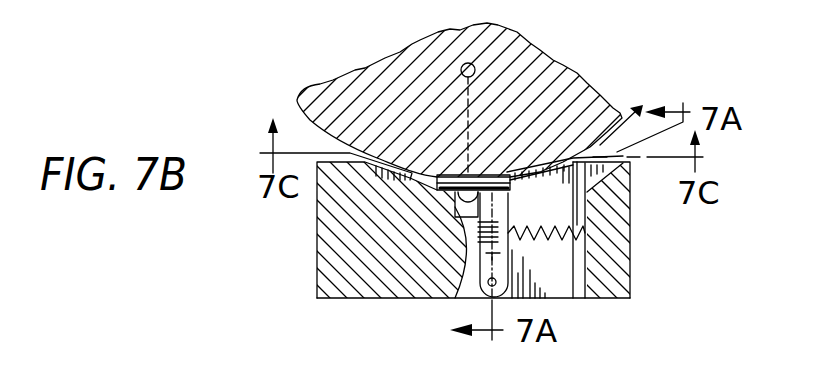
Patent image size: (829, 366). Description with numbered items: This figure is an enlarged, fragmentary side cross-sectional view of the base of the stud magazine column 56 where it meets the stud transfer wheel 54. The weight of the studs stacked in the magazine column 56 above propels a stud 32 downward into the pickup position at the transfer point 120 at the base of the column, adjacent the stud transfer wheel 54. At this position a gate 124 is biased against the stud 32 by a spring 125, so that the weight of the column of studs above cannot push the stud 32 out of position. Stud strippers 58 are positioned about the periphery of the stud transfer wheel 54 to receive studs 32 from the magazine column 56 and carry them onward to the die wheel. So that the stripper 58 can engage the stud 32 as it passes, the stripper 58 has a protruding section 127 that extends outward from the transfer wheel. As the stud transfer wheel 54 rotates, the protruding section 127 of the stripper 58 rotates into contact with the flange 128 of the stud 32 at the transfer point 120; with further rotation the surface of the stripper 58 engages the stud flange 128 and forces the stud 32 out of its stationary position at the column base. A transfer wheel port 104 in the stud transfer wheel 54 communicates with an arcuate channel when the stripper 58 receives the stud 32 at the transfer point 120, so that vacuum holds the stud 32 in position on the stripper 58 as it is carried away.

The transfer wheel port 104 is at (460, 63).
The stud transfer wheel 54 is at (530, 50).
The flange 128 is at (507, 167).
The spring 125 is at (537, 228).
The gate 124 is at (505, 270).
The stud stripper 58 is at (440, 190).
The protruding section 127 is at (452, 200).
The transfer point 120 is at (457, 202).
The stud magazine column 56 is at (365, 290).
The stud 32 is at (440, 290).